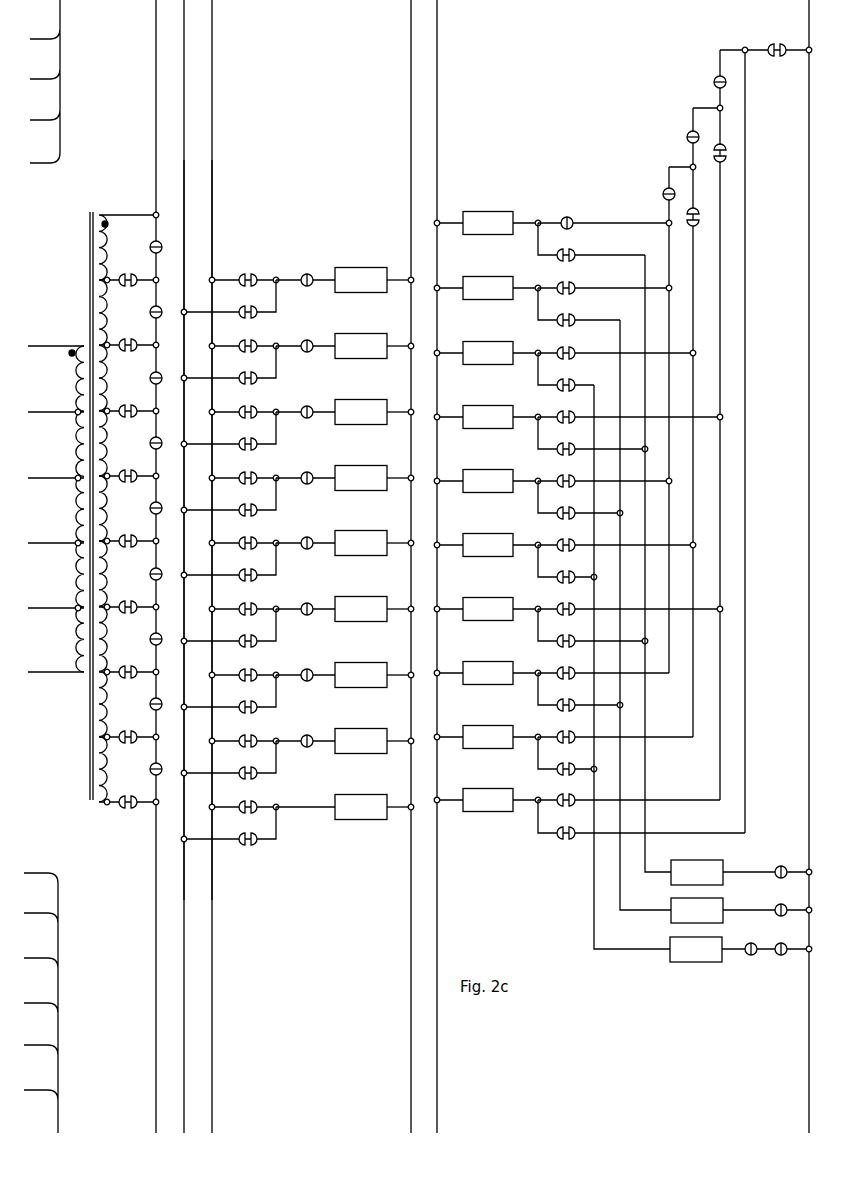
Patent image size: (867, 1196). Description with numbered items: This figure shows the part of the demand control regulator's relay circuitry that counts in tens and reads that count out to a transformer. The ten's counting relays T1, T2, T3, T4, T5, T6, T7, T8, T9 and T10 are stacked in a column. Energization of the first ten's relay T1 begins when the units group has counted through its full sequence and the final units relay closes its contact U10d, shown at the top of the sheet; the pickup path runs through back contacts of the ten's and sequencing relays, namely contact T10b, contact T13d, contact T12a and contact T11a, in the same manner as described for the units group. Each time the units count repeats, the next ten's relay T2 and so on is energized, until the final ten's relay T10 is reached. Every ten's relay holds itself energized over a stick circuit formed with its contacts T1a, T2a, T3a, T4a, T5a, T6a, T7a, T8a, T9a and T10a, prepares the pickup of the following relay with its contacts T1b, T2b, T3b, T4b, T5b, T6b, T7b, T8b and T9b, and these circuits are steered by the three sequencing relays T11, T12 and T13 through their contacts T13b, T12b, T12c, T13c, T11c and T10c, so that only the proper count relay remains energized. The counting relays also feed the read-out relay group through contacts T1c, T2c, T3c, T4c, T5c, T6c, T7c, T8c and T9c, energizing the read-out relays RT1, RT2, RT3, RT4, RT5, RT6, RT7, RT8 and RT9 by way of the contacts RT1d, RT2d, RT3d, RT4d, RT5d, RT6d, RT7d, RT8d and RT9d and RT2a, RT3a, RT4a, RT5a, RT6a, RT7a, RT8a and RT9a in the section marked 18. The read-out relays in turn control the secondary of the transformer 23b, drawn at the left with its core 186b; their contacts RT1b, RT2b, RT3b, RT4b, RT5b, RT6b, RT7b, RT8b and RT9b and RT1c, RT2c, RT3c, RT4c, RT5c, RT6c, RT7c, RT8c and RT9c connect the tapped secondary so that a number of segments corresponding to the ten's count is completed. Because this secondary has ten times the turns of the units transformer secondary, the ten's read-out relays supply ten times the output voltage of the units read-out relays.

The rectifier/diode network section 18 is at (292, 186).
The transformer 23b is at (99, 213).
The transformer core 186b is at (97, 802).
The read-out relay RT1 is at (374, 280).
The read-out relay RT2 is at (374, 346).
The read-out relay RT3 is at (374, 412).
The read-out relay RT4 is at (374, 478).
The read-out relay RT5 is at (374, 543).
The read-out relay RT6 is at (374, 609).
The read-out relay RT7 is at (374, 675).
The read-out relay RT8 is at (374, 741).
The read-out relay RT9 is at (345, 807).
The read-out relay contact RT1b is at (152, 244).
The read-out relay contact RT2b is at (152, 309).
The read-out relay contact RT3b is at (152, 375).
The read-out relay contact RT4b is at (152, 440).
The read-out relay contact RT5b is at (152, 505).
The read-out relay contact RT6b is at (152, 571).
The read-out relay contact RT7b is at (152, 636).
The read-out relay contact RT8b is at (152, 701).
The read-out relay contact RT9b is at (152, 766).
The read-out relay contact RT1c is at (130, 269).
The read-out relay contact RT2c is at (130, 334).
The read-out relay contact RT3c is at (130, 400).
The read-out relay contact RT4c is at (130, 465).
The read-out relay contact RT5c is at (130, 530).
The read-out relay contact RT6c is at (130, 596).
The read-out relay contact RT7c is at (130, 661).
The read-out relay contact RT8c is at (130, 726).
The read-out relay contact RT9c is at (130, 791).
The read-out relay contact RT1d is at (258, 301).
The read-out relay contact RT2d is at (258, 367).
The read-out relay contact RT3d is at (258, 433).
The read-out relay contact RT4d is at (258, 499).
The read-out relay contact RT5d is at (258, 564).
The read-out relay contact RT6d is at (258, 630).
The read-out relay contact RT7d is at (258, 696).
The read-out relay contact RT8d is at (258, 762).
The read-out relay contact RT9d is at (256, 845).
The read-out relay contact RT2a is at (314, 262).
The read-out relay contact RT3a is at (314, 328).
The read-out relay contact RT4a is at (314, 394).
The read-out relay contact RT5a is at (314, 460).
The read-out relay contact RT6a is at (314, 525).
The read-out relay contact RT7a is at (314, 591).
The read-out relay contact RT8a is at (314, 657).
The read-out relay contact RT9a is at (314, 723).
The ten's relay contact T1c is at (258, 265).
The ten's relay contact T2c is at (258, 331).
The ten's relay contact T3c is at (258, 397).
The ten's relay contact T4c is at (258, 463).
The ten's relay contact T5c is at (258, 528).
The ten's relay contact T6c is at (258, 594).
The ten's relay contact T7c is at (258, 660).
The ten's relay contact T8c is at (258, 726).
The ten's relay contact T9c is at (258, 801).
The first ten's relay T1 is at (487, 223).
The ten's relay T2 is at (487, 288).
The ten's relay T3 is at (487, 353).
The ten's relay T4 is at (487, 417).
The ten's relay T5 is at (487, 481).
The ten's relay T6 is at (487, 545).
The ten's relay T7 is at (487, 609).
The ten's relay T8 is at (487, 673).
The ten's relay T9 is at (487, 737).
The final ten's relay T10 is at (487, 800).
The sequencing relay T11 is at (728, 570).
The sequencing relay T12 is at (716, 621).
The sequencing relay T13 is at (703, 673).
The front contact of ten's relay T1a is at (576, 253).
The front contact of ten's relay T2a is at (576, 318).
The front contact of ten's relay T3a is at (576, 383).
The front contact of ten's relay T4a is at (557, 446).
The front contact of ten's relay T5a is at (557, 510).
The front contact of ten's relay T6a is at (557, 574).
The front contact of ten's relay T7a is at (557, 638).
The front contact of ten's relay T8a is at (557, 702).
The front contact of ten's relay T9a is at (557, 766).
The front contact of ten's relay T10a is at (575, 840).
The contact of ten's relay T1b is at (576, 286).
The contact of ten's relay T2b is at (576, 351).
The contact of ten's relay T3b is at (559, 412).
The contact of ten's relay T4b is at (559, 476).
The contact of ten's relay T5b is at (559, 540).
The contact of ten's relay T6b is at (559, 604).
The contact of ten's relay T7b is at (559, 668).
The contact of ten's relay T8b is at (559, 732).
The contact of ten's relay T9b is at (559, 795).
The back contact of sequencing relay T11a is at (567, 216).
The back contact of ten's relay T10b is at (714, 80).
The back contact of sequencing relay T13d is at (687, 137).
The contact of sequencing relay T13b is at (727, 150).
The back contact of sequencing relay T12a is at (663, 193).
The front contact of sequencing relay T12b is at (686, 212).
The contact of sequencing relay T12c is at (790, 858).
The back contact of sequencing relay T13c is at (790, 898).
The contact of sequencing relay T11c is at (751, 956).
The contact of ten's relay T10c is at (781, 956).
The contact of units count relay U10d is at (785, 33).